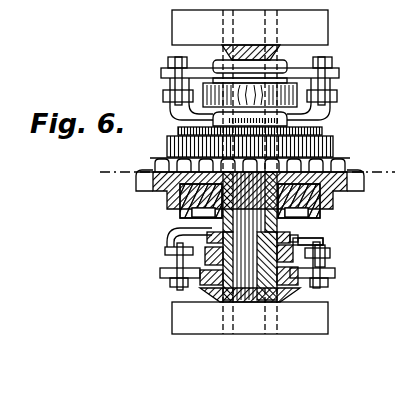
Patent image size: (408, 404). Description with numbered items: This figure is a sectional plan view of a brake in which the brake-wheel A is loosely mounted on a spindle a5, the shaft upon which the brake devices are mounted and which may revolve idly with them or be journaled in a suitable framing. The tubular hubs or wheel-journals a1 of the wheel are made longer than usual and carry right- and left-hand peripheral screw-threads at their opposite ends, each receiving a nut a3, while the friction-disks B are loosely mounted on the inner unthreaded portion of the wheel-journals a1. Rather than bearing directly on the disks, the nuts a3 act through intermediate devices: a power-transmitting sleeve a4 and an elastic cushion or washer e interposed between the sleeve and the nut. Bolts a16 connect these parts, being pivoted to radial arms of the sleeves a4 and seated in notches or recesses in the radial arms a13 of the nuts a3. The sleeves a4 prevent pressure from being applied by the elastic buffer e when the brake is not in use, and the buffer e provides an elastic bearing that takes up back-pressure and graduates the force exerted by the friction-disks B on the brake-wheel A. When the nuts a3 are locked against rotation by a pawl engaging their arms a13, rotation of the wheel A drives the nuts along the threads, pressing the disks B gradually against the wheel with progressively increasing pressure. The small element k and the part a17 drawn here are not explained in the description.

The wheel A is at (153, 189).
The friction-disks B is at (182, 132).
The key k is at (250, 153).
The wheel-journals a1 is at (250, 202).
The nut a3 is at (270, 57).
The power-transmitting sleeve a4 is at (287, 120).
The spindle a5 is at (250, 265).
The radial arms of the nuts a13 is at (336, 276).
The bolts a16 is at (338, 77).
The bracket leg a17 is at (324, 242).
The elastic cushion or washer e is at (299, 238).